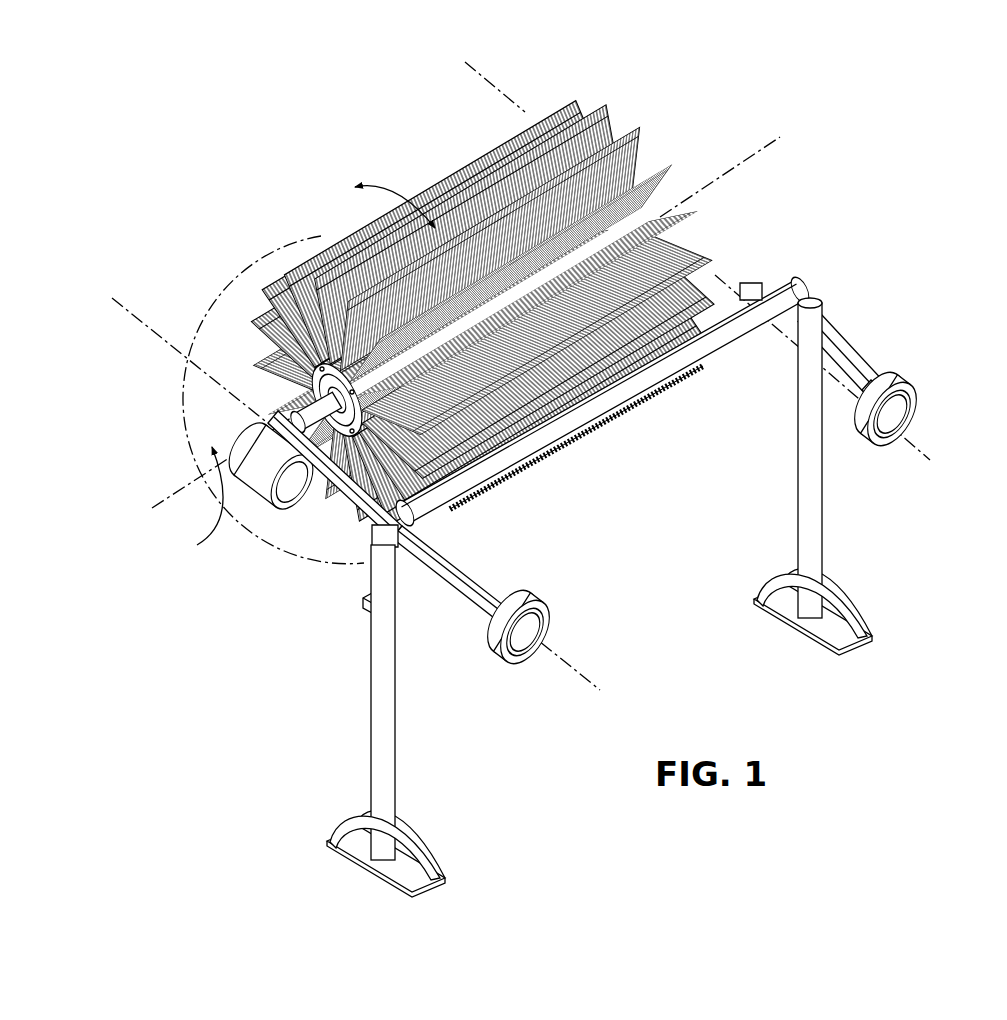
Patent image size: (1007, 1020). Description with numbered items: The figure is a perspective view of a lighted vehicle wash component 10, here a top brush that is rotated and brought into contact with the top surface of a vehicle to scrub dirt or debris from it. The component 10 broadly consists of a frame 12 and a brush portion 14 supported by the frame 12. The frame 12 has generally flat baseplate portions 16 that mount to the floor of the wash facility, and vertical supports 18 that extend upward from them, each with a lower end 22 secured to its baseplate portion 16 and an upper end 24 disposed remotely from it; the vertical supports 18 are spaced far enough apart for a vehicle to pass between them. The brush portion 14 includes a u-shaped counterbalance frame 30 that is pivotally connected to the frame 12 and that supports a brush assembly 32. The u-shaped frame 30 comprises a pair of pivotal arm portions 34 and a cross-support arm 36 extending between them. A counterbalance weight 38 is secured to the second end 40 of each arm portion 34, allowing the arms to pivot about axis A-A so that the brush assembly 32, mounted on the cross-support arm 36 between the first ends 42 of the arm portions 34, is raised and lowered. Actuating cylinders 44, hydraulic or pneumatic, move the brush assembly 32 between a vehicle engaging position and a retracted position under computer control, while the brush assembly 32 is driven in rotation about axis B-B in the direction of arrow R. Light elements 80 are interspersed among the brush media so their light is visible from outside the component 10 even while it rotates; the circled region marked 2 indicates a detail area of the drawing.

The detail view region 2 is at (155, 384).
The lighted vehicle wash component 10 is at (522, 468).
The frame 12 is at (608, 548).
The brush portion 14 is at (501, 311).
The baseplate portion 16 is at (383, 879).
The vertical support 18 is at (386, 718).
The lower end 22 is at (616, 589).
The upper end 24 is at (376, 567).
The u-shaped counterbalance frame 30 is at (768, 285).
The brush assembly 32 is at (590, 99).
The pivotal arm portion 34 is at (360, 535).
The cross-support arm 36 is at (608, 396).
The counterbalance weight 38 is at (537, 630).
The second end 40 is at (470, 613).
The first end 42 is at (254, 410).
The actuating cylinder 44 is at (800, 404).
The light element 80 is at (662, 208).